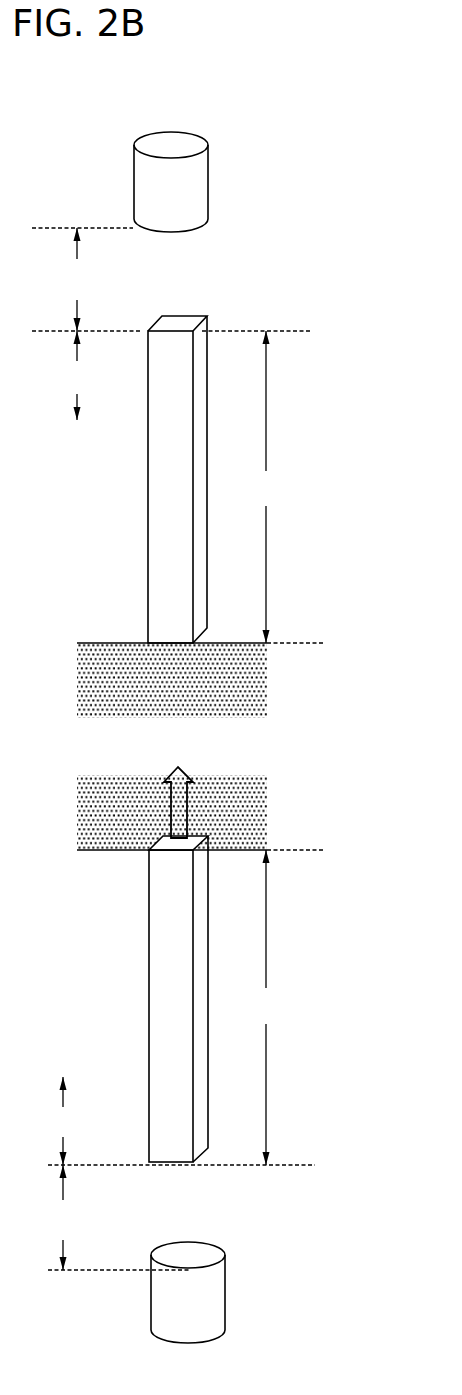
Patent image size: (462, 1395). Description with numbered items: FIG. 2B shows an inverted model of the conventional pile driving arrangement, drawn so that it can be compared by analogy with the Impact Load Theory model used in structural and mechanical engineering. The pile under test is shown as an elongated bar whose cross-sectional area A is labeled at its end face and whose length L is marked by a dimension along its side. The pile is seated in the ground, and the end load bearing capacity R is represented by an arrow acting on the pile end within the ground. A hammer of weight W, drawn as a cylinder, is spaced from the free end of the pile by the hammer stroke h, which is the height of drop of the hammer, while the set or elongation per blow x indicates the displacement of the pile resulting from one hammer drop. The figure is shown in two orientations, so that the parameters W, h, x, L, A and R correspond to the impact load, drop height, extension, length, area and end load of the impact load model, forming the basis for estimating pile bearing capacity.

The hammer weight W is at (192, 192).
The pile cross-sectional area A is at (180, 328).
The load bearing capacity R is at (178, 788).
The hammer stroke h is at (71, 749).
The set per blow x is at (70, 748).
The pile length L is at (265, 748).